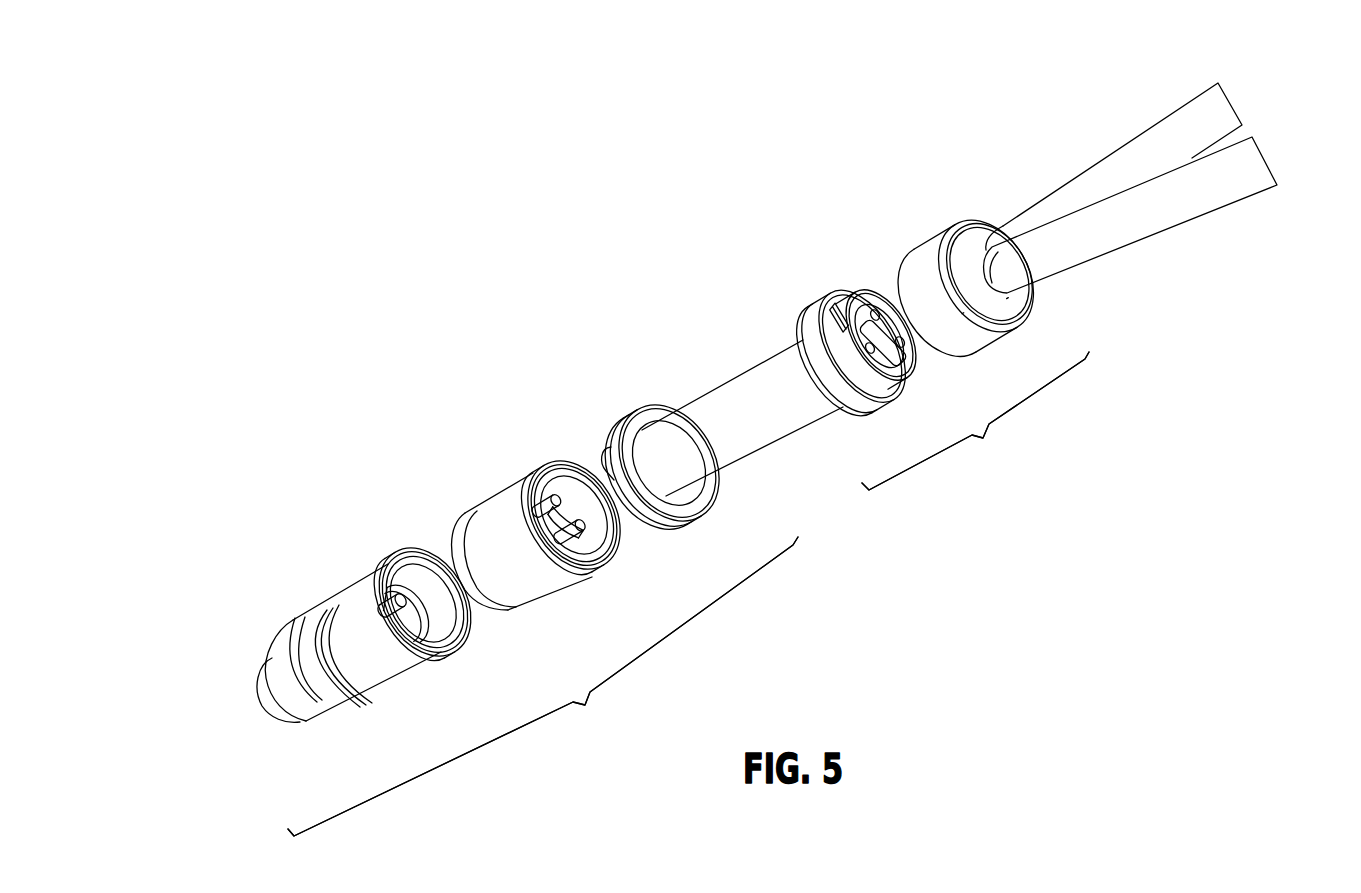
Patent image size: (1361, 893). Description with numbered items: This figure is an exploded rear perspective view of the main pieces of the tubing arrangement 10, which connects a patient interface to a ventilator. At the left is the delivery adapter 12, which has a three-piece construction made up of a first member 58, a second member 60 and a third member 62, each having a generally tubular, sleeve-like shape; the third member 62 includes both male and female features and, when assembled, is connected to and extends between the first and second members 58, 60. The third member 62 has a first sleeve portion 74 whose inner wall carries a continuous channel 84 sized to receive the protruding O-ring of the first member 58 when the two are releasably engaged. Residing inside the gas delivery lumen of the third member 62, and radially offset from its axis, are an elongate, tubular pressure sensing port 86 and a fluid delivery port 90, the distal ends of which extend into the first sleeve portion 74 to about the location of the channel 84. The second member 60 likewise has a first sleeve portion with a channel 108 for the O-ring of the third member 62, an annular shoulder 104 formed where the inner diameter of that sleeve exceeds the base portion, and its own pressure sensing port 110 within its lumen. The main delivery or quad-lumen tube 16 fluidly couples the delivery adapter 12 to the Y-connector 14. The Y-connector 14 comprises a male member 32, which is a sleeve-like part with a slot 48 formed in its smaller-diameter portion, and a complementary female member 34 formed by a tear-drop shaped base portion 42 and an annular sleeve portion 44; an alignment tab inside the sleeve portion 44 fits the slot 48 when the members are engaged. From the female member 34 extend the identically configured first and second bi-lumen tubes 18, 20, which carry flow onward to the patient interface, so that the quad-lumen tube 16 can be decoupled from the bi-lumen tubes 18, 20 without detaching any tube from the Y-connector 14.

The tubing arrangement 10 is at (691, 192).
The delivery adapter 12 is at (543, 686).
The Y-connector 14 is at (975, 421).
The quad-lumen tube 16 is at (720, 371).
The first bi-lumen tube 18 is at (1115, 134).
The second bi-lumen tube 20 is at (1190, 235).
The male member 32 is at (853, 318).
The female member 34 is at (966, 280).
The base portion 42 is at (981, 308).
The sleeve portion 44 is at (939, 338).
The slot 48 is at (832, 318).
The first member 58 is at (618, 403).
The second member 60 is at (363, 612).
The third member 62 is at (569, 547).
The first sleeve portion 74 is at (566, 467).
The channel 84 is at (622, 540).
The pressure sensing port 86 is at (553, 500).
The fluid delivery port 90 is at (583, 533).
The shoulder 104 is at (436, 640).
The channel 108 is at (420, 550).
The pressure sensing port 110 is at (407, 590).